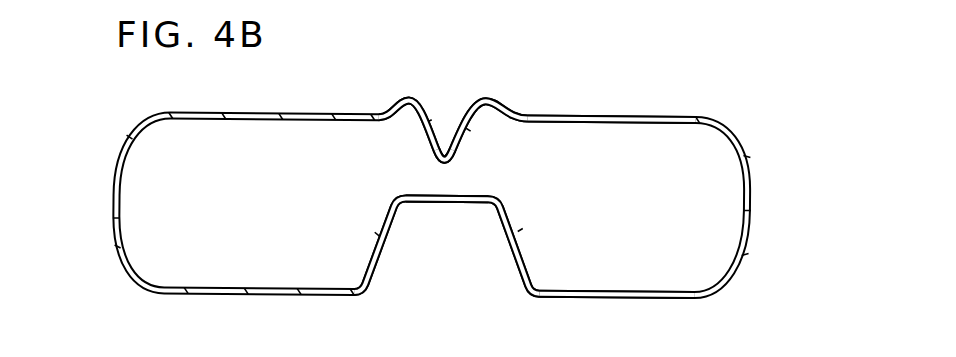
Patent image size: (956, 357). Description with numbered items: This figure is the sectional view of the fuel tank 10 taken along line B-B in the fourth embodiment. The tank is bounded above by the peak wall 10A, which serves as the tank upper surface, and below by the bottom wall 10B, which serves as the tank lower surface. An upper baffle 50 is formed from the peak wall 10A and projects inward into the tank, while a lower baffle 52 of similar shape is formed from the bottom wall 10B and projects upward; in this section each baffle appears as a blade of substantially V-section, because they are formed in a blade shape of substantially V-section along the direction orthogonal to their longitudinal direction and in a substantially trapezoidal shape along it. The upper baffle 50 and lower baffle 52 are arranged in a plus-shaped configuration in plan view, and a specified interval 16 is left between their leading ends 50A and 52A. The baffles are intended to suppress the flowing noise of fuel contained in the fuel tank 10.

The fuel tank 10 is at (642, 83).
The peak wall 10A is at (657, 117).
The bottom wall 10B is at (673, 300).
The specified interval 16 is at (453, 175).
The upper baffle 50 is at (421, 137).
The leading end of the upper baffle 50A is at (447, 165).
The lower baffle 52 is at (527, 251).
The leading end of the lower baffle 52A is at (468, 195).